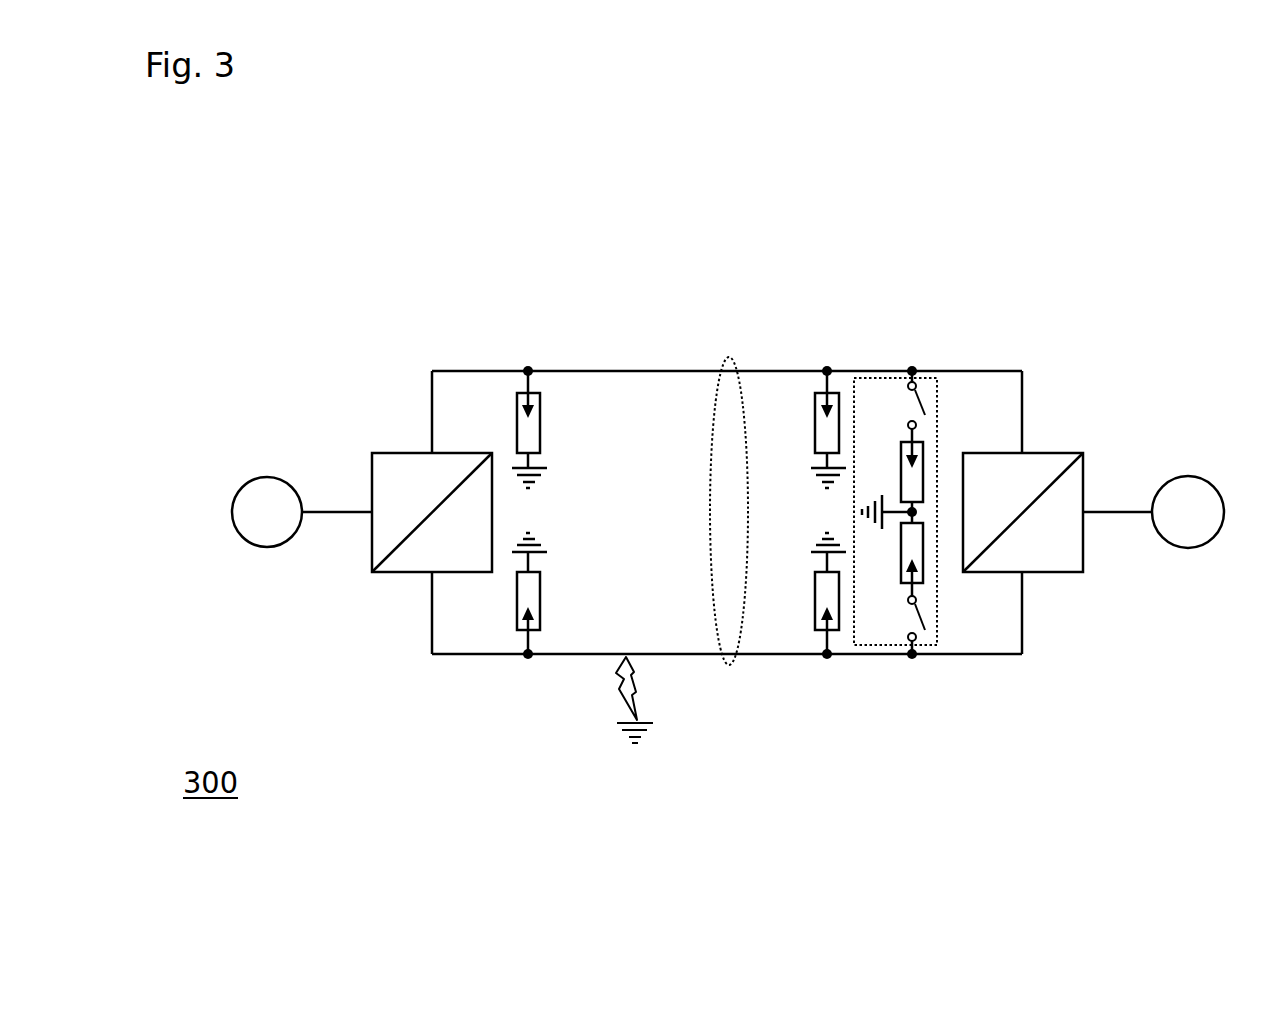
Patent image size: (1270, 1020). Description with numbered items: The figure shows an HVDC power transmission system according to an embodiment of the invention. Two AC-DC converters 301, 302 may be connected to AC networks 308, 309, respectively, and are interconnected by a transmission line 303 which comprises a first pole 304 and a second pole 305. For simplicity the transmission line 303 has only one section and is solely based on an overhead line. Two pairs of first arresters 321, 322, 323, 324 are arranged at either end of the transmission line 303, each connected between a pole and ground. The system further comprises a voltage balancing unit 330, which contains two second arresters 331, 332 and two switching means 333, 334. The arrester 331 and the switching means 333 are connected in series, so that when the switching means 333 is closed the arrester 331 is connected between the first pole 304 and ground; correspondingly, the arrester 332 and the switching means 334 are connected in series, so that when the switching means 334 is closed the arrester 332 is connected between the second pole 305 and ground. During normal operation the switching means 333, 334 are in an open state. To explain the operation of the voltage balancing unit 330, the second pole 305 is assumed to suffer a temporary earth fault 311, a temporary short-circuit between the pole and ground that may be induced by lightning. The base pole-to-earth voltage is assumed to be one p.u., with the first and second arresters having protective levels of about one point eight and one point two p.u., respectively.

The AC-DC converter 301 is at (415, 489).
The AC-DC converter 302 is at (1038, 489).
The transmission line 303 is at (701, 511).
The first pole 304 is at (727, 349).
The second pole 305 is at (727, 679).
The AC network 308 is at (279, 496).
The AC network 309 is at (1176, 497).
The temporary earth fault 311 is at (657, 700).
The first arrester 321 is at (557, 427).
The first arrester 322 is at (557, 596).
The first arrester 323 is at (799, 427).
The first arrester 324 is at (799, 596).
The voltage balancing unit 330 is at (926, 511).
The second arrester 331 is at (901, 433).
The second arrester 332 is at (901, 588).
The switching means 333 is at (923, 398).
The switching means 334 is at (925, 647).